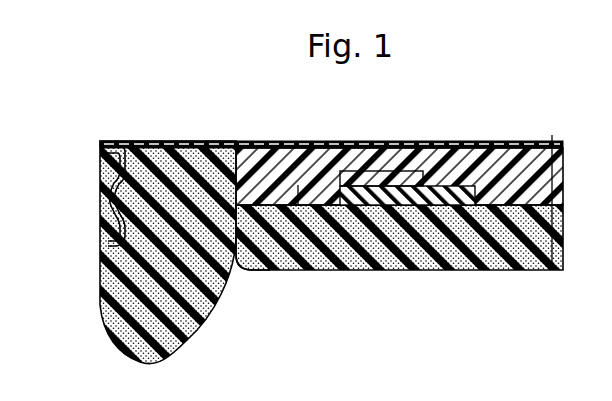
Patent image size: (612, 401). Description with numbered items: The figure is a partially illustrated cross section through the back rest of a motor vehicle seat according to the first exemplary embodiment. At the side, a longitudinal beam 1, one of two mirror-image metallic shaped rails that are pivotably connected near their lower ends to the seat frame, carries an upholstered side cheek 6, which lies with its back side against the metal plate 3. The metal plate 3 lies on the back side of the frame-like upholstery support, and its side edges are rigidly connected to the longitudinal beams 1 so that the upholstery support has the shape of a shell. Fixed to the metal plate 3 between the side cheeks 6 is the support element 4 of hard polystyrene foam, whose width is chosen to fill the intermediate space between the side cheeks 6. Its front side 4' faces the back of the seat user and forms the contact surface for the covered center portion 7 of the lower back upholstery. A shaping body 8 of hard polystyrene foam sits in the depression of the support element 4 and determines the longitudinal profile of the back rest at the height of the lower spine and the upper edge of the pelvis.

The longitudinal beam 1 is at (102, 189).
The metal plate 3 is at (270, 141).
The support element 4 is at (400, 263).
The front side of the support element 4' is at (253, 283).
The side cheek 6 is at (100, 315).
The center portion of the lower back upholstery 7 is at (400, 273).
The shaping body 8 is at (520, 141).